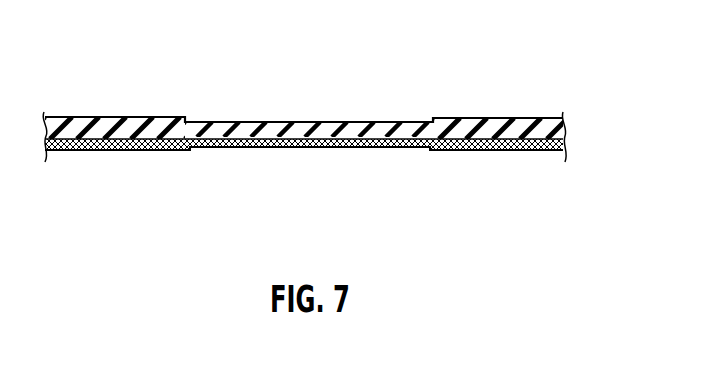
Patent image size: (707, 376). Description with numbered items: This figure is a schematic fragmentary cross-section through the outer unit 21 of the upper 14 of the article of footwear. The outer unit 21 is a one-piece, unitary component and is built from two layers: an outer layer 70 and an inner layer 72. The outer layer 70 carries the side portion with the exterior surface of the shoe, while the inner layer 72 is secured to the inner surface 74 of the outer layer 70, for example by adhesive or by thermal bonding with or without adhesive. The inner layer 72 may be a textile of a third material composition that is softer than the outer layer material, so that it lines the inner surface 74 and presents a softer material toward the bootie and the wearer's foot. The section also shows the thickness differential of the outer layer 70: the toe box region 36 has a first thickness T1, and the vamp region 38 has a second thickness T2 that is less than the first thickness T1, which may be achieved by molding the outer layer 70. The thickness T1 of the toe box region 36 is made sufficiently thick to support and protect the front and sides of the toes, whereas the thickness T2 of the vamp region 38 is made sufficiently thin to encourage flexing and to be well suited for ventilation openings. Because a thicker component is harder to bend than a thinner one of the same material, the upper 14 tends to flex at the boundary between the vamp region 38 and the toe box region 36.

The upper 14 is at (309, 127).
The outer unit 21 is at (309, 127).
The toe box region 36 is at (302, 98).
The vamp region 38 is at (347, 124).
The outer layer 70 is at (153, 121).
The inner layer 72 is at (144, 151).
The inner surface 74 is at (192, 160).
The first thickness T1 is at (85, 83).
The second thickness T2 is at (306, 83).